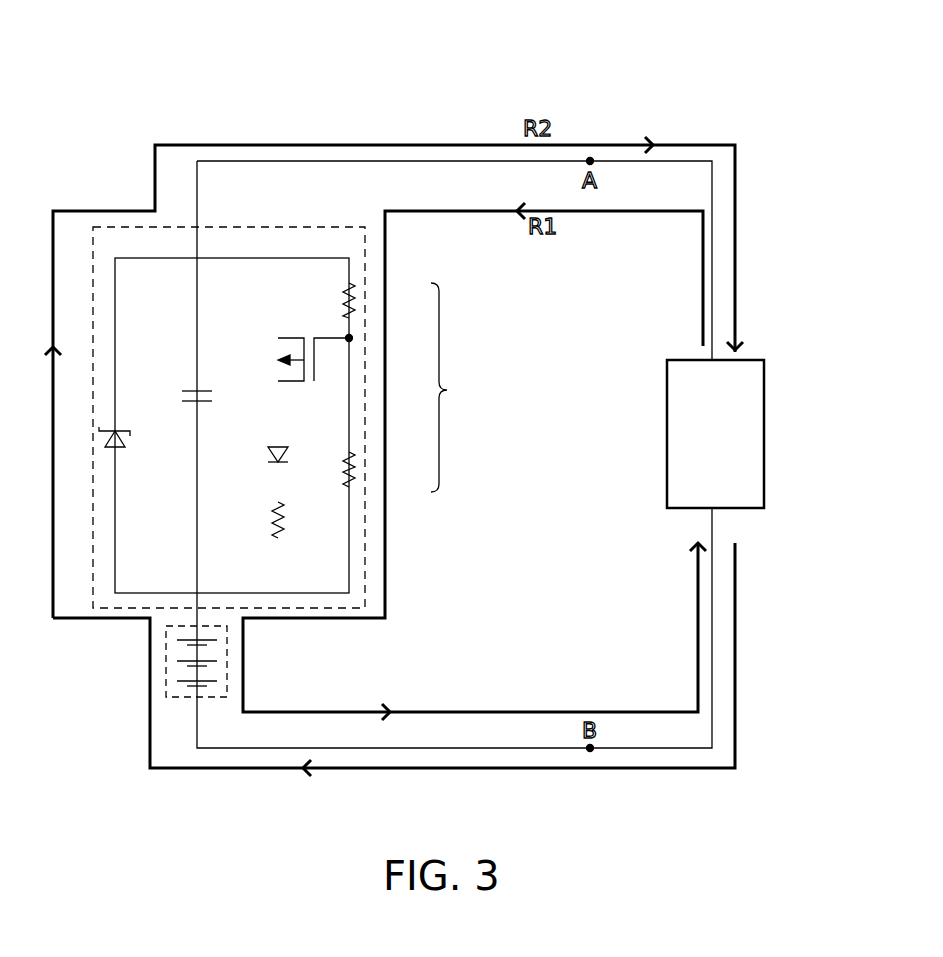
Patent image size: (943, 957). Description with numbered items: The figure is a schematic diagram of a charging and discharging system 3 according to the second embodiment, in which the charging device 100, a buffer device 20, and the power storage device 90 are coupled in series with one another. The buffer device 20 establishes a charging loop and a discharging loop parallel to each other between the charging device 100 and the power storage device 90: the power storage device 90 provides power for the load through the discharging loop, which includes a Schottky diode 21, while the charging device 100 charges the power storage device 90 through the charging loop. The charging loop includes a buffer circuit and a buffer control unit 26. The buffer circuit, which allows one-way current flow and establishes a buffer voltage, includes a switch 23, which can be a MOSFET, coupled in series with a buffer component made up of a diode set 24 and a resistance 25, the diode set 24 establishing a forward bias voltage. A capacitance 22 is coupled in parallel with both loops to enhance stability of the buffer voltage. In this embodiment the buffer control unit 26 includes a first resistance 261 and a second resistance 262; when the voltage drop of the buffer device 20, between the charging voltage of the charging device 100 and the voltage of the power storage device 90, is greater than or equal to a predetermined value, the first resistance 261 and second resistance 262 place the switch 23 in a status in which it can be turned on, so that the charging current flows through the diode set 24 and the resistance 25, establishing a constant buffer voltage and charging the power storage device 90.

The charging and discharging system 3 is at (760, 78).
The buffer device 20 is at (131, 226).
The Schottky diode 21 is at (108, 420).
The capacitance 22 is at (190, 380).
The switch 23 is at (277, 368).
The diode set 24 is at (268, 456).
The resistance 25 is at (272, 521).
The buffer control unit 26 is at (456, 387).
The first resistance 261 is at (356, 300).
The second resistance 262 is at (356, 470).
The power storage device 90 is at (227, 660).
The charging device 100 is at (765, 437).